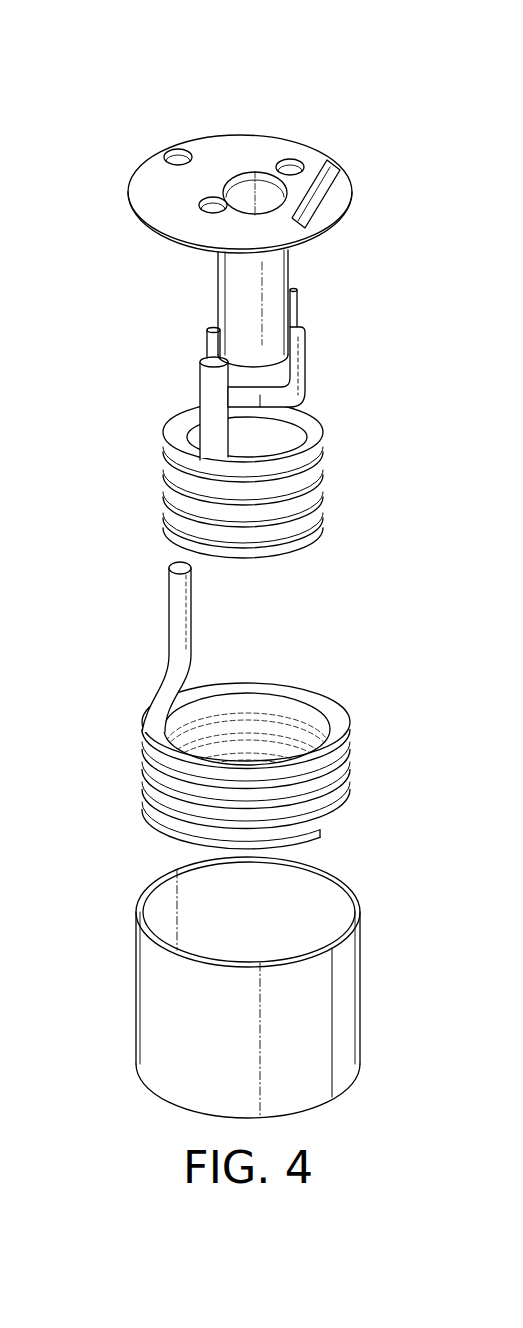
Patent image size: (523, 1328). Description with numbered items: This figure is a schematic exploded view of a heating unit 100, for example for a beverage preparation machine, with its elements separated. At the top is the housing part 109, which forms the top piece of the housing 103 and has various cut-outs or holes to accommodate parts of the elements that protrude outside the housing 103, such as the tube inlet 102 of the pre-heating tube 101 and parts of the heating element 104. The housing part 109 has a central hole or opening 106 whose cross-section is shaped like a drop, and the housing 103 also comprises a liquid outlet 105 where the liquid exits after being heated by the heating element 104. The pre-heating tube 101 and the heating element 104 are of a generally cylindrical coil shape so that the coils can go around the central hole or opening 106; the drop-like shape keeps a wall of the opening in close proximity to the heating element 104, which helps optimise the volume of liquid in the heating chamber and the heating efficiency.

The heating unit 100 is at (110, 113).
The pre-heating tube 101 is at (157, 742).
The tube inlet 102 is at (172, 566).
The housing 103 is at (362, 1003).
The heating element 104 is at (314, 442).
The liquid outlet 105 is at (333, 181).
The central hole or opening 106 is at (259, 188).
The housing part 109 is at (147, 212).